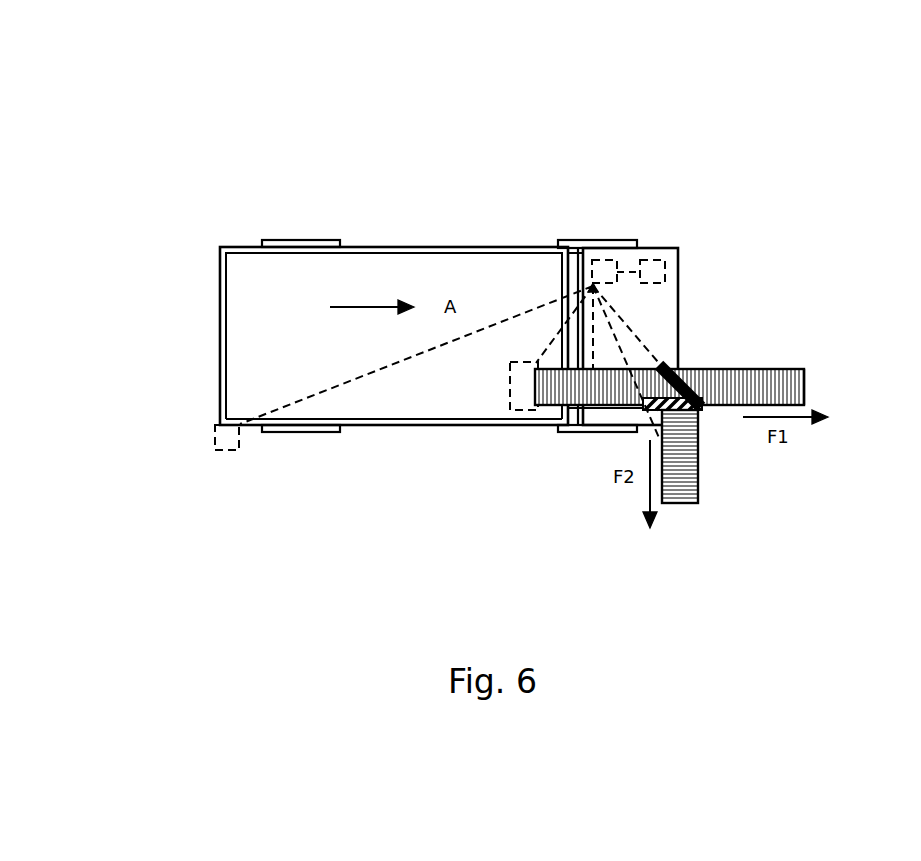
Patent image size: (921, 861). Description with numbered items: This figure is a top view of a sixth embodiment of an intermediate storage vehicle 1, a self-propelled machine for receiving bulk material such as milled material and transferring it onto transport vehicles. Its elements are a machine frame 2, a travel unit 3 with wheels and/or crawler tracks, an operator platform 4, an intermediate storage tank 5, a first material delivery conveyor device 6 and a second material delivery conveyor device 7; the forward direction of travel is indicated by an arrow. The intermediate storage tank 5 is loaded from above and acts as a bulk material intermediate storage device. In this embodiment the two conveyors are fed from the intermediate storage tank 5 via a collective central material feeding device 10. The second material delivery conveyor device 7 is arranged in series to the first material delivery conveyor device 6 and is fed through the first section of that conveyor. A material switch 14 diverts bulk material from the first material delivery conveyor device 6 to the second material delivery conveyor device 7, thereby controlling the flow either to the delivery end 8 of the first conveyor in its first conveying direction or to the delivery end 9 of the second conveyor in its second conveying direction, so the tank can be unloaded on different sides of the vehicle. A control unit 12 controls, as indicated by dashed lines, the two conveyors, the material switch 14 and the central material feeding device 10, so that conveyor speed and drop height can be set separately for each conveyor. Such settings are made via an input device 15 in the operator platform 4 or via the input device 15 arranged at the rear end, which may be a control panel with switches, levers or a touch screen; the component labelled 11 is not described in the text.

The intermediate storage vehicle 1 is at (470, 143).
The machine frame 2 is at (522, 248).
The travel unit 3 is at (255, 272).
The operator platform 4 is at (663, 250).
The intermediate storage tank 5 is at (255, 378).
The first material delivery conveyor device 6 is at (770, 380).
The second material delivery conveyor device 7 is at (697, 443).
The delivery end 8 is at (797, 385).
The delivery end 9 is at (682, 498).
The central material feeding device 10 is at (538, 402).
The product 11 is at (684, 412).
The control unit 12 is at (606, 268).
The material switch 14 is at (671, 364).
The input device 15 is at (664, 272).